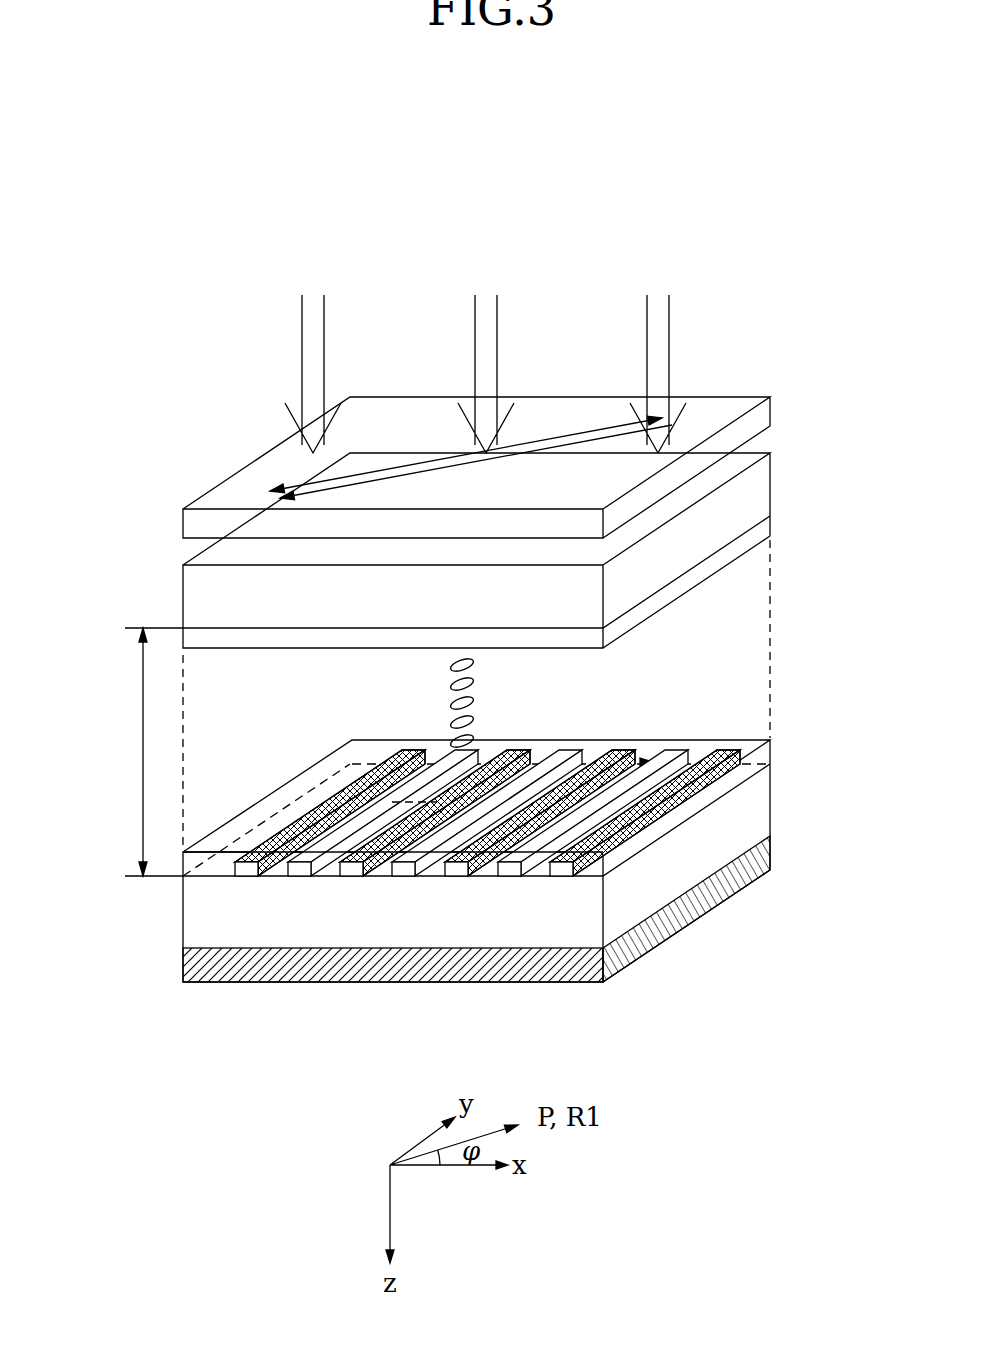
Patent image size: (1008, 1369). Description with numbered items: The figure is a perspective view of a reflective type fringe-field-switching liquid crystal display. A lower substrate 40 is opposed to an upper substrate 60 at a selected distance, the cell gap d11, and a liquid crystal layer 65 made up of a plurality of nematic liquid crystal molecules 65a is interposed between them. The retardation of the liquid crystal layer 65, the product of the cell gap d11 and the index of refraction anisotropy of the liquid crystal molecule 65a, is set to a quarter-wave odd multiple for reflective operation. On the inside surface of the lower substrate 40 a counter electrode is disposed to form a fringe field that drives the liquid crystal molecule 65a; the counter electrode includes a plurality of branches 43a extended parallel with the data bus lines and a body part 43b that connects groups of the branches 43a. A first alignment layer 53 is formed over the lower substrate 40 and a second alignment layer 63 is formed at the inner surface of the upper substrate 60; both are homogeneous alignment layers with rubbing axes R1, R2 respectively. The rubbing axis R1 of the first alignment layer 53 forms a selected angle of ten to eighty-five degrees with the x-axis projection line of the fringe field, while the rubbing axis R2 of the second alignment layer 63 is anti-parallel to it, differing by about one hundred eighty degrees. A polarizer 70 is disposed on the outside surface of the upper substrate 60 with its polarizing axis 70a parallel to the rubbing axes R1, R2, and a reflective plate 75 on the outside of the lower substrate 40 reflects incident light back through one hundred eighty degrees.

The polarizer 70 is at (757, 412).
The polarizing axis 70a is at (572, 433).
The rubbing axis of the second alignment layer R2 is at (411, 472).
The upper substrate 60 is at (757, 482).
The second alignment layer 63 is at (757, 522).
The liquid crystal layer 65 is at (762, 678).
The liquid crystal molecules 65a is at (473, 723).
The first alignment layer 53 is at (760, 762).
The lower substrate 40 is at (760, 808).
The reflective plate 75 is at (768, 862).
The branches of the counter electrode 43a is at (242, 868).
The body part of the counter electrode 43b is at (400, 868).
The rubbing axis of the first alignment layer R1 is at (392, 807).
The cell gap d11 is at (149, 752).